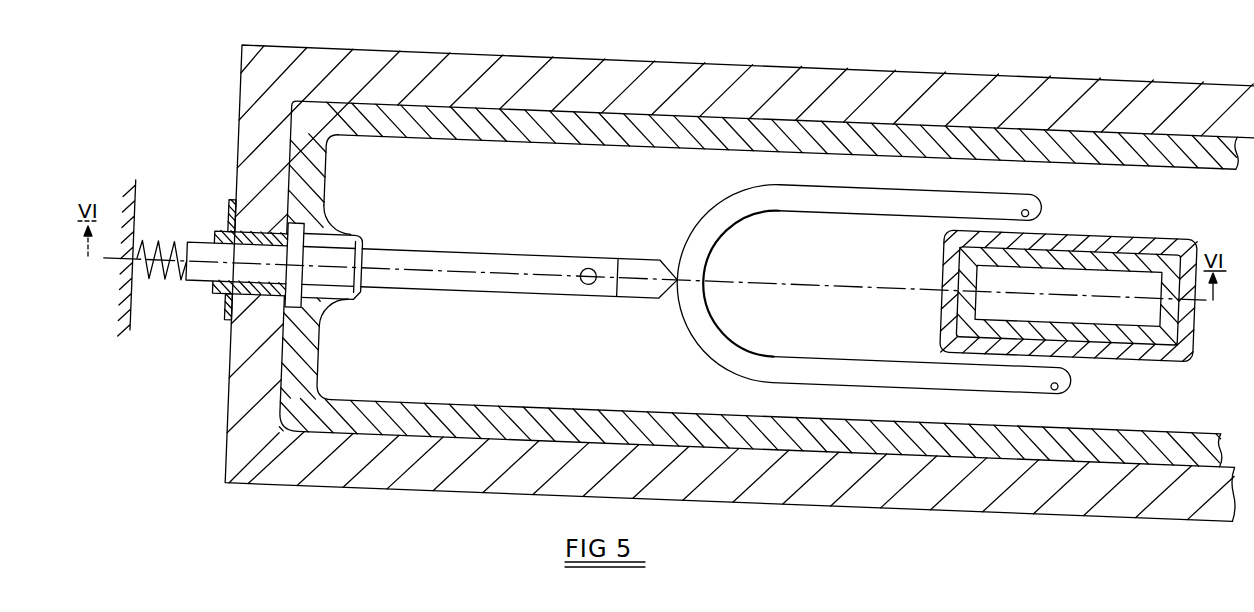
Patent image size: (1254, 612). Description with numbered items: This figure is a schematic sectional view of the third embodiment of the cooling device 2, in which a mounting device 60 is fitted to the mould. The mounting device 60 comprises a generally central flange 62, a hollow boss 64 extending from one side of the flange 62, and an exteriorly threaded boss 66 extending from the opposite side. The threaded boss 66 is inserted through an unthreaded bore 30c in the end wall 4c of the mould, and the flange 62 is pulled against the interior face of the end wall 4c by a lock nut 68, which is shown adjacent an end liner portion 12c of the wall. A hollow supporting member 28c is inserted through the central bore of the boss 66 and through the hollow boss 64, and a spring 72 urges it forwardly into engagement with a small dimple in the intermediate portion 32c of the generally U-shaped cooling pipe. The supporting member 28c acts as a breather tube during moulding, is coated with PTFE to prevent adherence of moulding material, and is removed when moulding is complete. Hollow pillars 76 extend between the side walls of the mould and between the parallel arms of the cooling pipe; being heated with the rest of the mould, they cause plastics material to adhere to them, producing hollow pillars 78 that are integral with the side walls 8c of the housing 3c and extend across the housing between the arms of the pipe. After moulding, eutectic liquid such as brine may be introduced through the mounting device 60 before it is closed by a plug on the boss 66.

The housing 2 is at (479, 53).
The housing 3c is at (648, 62).
The end wall 4c is at (238, 128).
The side walls 8c is at (883, 533).
The end liner portion 12c is at (362, 364).
The supporting member 28c is at (508, 306).
The unthreaded bore 30c is at (276, 294).
The intermediate portion of the cooling pipe 32c is at (702, 344).
The mounting device 60 is at (363, 224).
The central flange 62 is at (296, 306).
The hollow boss 64 is at (360, 300).
The exteriorly threaded boss 66 is at (218, 231).
The lock nut 68 is at (232, 200).
The spring 72 is at (148, 242).
The hollow pillars 76 is at (1103, 341).
The hollow pillars 78 is at (1148, 367).